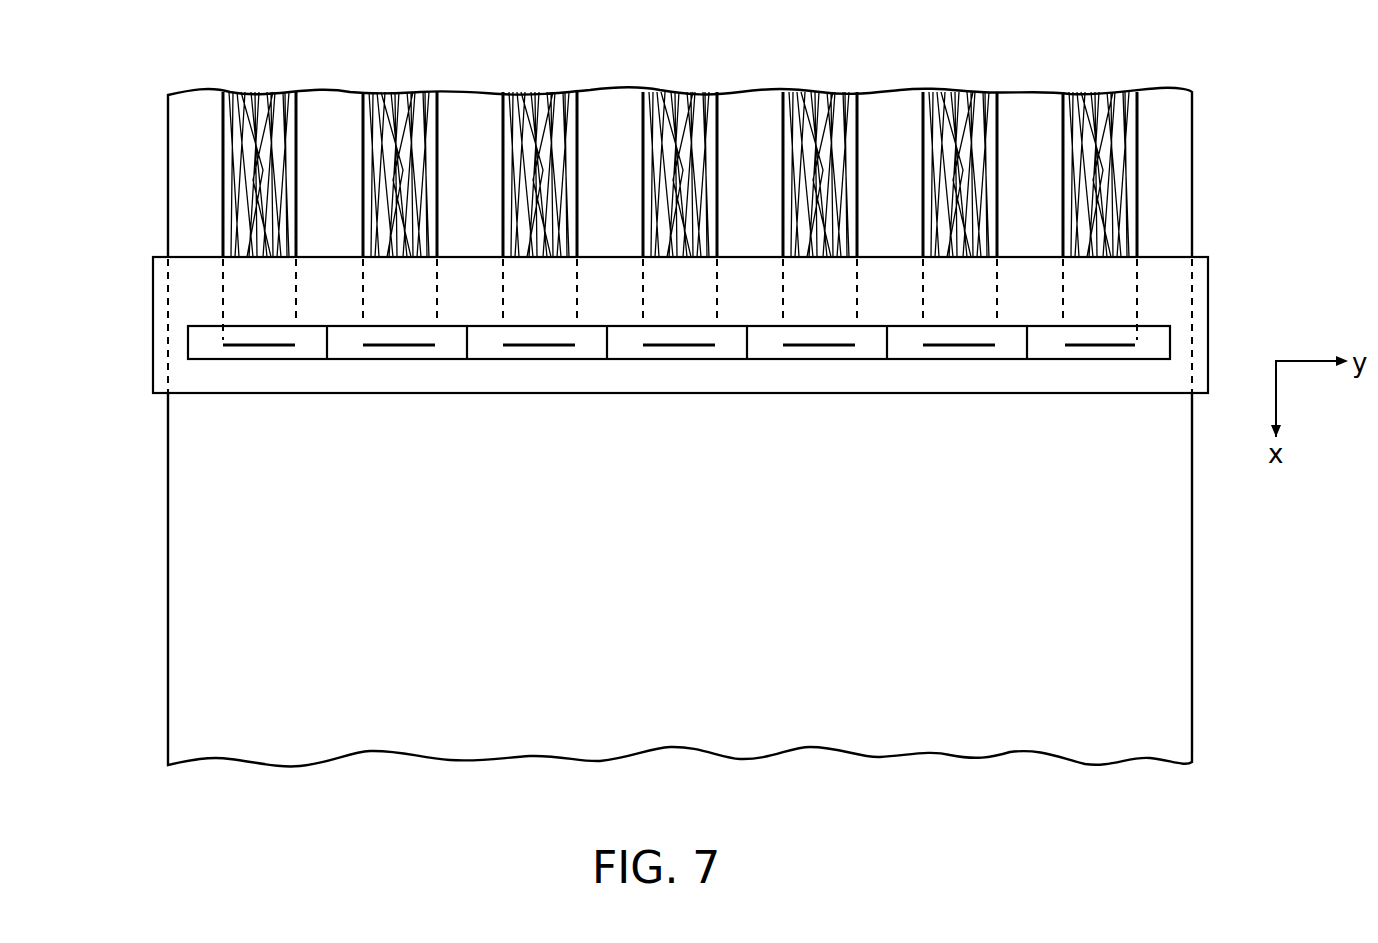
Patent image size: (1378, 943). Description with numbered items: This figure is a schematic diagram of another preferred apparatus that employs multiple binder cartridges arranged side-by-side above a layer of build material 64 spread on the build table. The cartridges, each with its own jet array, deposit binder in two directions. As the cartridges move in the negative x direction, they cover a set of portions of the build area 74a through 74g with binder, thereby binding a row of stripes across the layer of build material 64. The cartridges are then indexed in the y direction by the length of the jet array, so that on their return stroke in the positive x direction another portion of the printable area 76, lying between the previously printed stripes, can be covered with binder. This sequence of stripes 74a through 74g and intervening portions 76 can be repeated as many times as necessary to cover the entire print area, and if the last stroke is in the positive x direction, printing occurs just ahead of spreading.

The portion of the build area 74a is at (255, 92).
The portion of the build area 74g is at (1111, 93).
The another portion of the printable area 76 is at (1002, 92).
The layer of build material 64 is at (829, 627).